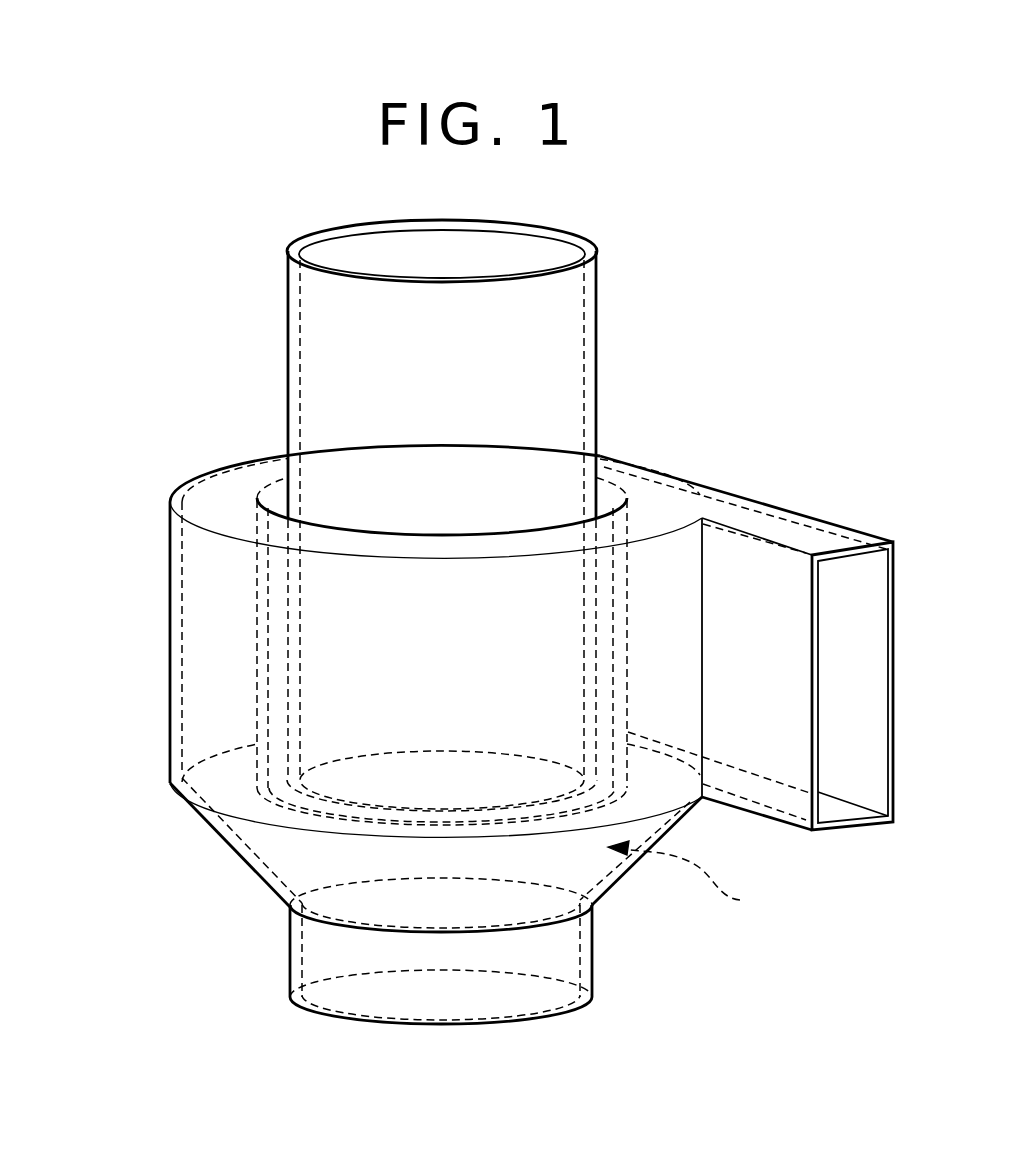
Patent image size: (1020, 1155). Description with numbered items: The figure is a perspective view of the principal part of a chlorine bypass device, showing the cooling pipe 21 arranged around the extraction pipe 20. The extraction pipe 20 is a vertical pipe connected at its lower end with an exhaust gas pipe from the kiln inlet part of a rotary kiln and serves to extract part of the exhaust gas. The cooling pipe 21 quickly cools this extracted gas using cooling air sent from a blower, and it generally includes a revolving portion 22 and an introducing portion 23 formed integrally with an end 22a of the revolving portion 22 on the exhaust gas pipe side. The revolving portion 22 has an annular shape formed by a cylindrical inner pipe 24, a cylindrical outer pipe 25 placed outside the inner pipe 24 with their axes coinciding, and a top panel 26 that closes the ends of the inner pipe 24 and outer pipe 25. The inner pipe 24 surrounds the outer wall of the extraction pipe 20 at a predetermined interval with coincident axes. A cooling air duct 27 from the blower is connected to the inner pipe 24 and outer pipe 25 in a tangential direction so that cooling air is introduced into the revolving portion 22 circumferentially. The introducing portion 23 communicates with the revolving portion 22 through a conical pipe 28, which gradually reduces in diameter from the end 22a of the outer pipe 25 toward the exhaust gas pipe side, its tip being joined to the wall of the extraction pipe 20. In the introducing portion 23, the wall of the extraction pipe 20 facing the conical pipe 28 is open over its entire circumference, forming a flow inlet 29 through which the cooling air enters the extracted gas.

The extraction pipe 20 is at (580, 332).
The cooling pipe 21 is at (108, 740).
The revolving portion 22 is at (195, 688).
The end of the revolving portion 22a is at (273, 820).
The introducing portion 23 is at (227, 842).
The inner pipe 24 is at (272, 500).
The outer pipe 25 is at (174, 540).
The top panel 26 is at (225, 493).
The cooling air duct 27 is at (810, 541).
The conical pipe 28 is at (615, 873).
The flow inlet 29 is at (695, 880).